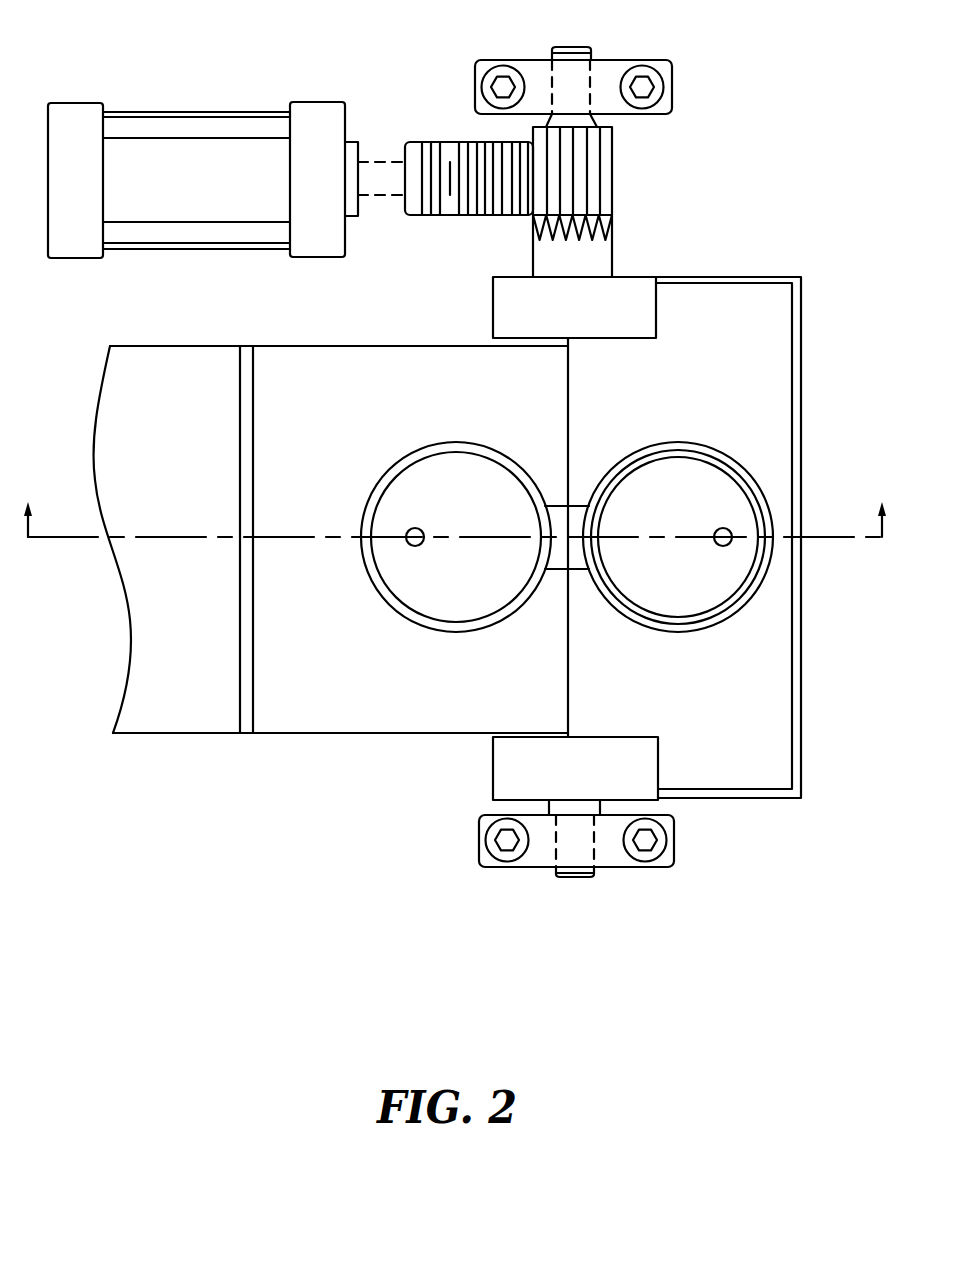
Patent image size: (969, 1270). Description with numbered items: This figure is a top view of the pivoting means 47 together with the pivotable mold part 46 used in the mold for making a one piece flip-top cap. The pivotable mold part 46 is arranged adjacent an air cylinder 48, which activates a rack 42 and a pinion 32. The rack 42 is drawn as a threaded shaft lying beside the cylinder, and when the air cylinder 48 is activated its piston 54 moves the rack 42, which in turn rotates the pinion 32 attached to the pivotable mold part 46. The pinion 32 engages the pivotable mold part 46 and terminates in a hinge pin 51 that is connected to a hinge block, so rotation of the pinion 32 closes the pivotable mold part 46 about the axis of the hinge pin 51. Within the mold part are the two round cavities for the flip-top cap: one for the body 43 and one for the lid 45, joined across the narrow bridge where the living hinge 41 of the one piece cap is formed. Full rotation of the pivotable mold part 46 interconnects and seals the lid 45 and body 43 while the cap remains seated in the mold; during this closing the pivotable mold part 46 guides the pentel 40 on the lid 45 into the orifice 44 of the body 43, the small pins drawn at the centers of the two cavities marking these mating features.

The pinion 32 is at (613, 187).
The pentel 40 is at (720, 529).
The living hinge 41 is at (553, 505).
The rack 42 is at (483, 215).
The body 43 is at (461, 442).
The orifice 44 is at (418, 528).
The lid 45 is at (672, 438).
The pivotable mold part 46 is at (700, 277).
The pivoting means 47 is at (430, 53).
The air cylinder 48 is at (190, 260).
The hinge pin 51 is at (573, 878).
The piston 54 is at (375, 157).